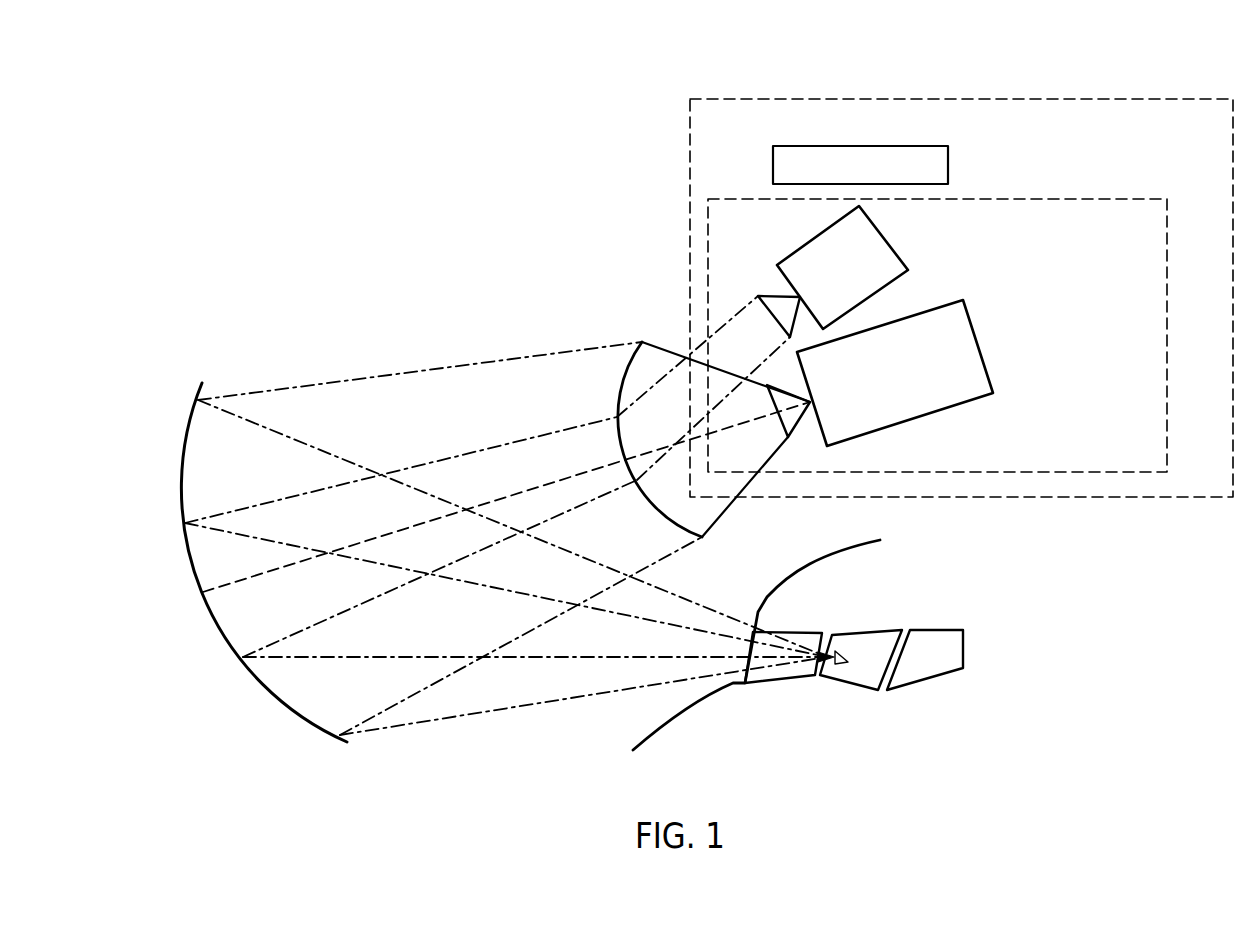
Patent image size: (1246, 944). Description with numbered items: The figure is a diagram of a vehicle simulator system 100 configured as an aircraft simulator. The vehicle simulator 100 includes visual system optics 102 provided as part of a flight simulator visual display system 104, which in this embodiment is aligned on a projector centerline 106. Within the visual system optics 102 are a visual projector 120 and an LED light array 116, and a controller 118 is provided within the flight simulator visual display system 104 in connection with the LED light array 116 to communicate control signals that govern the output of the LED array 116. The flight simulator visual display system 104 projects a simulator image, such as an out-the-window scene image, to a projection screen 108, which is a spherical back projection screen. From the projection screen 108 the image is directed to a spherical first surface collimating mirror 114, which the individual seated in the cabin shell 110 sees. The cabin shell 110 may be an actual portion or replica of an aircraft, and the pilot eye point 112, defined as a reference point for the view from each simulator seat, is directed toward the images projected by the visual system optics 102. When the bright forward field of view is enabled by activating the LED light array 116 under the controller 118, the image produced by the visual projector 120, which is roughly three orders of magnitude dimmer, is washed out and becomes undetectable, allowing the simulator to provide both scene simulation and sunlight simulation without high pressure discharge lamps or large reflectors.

The vehicle simulator system 100 is at (252, 99).
The visual system optics 102 is at (1046, 198).
The flight simulator visual display system 104 is at (1128, 99).
The projector centerline 106 is at (242, 562).
The projection screen 108 is at (622, 389).
The cabin shell 110 is at (826, 562).
The pilot eye point 112 is at (836, 663).
The spherical first surface collimating mirror 114 is at (225, 638).
The LED light array 116 is at (810, 240).
The controller 118 is at (773, 158).
The visual projector 120 is at (975, 326).